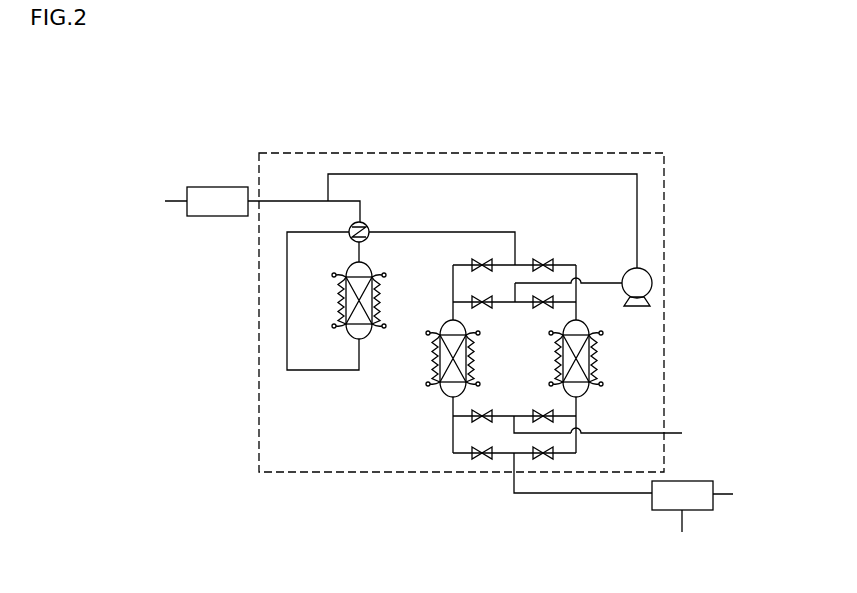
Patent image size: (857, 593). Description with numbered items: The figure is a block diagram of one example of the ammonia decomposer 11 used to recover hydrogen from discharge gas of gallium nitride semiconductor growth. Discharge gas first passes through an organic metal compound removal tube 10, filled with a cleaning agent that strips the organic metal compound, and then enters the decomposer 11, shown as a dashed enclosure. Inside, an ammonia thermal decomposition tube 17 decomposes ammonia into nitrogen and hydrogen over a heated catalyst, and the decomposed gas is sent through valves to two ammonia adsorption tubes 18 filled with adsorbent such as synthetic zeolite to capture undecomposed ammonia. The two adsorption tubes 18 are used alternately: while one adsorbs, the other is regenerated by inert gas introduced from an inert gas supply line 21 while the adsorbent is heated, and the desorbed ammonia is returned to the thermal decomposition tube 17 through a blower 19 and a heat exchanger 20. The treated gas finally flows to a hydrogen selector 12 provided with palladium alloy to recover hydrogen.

The organic metal compound removal tube 10 is at (225, 187).
The ammonia decomposer 11 is at (665, 350).
The hydrogen selector 12 is at (695, 481).
The ammonia thermal decomposition tube 17 is at (345, 337).
The ammonia adsorption tubes 18 is at (443, 395).
The blower 19 is at (650, 275).
The heat exchanger 20 is at (370, 223).
The inert gas supply line 21 is at (680, 433).